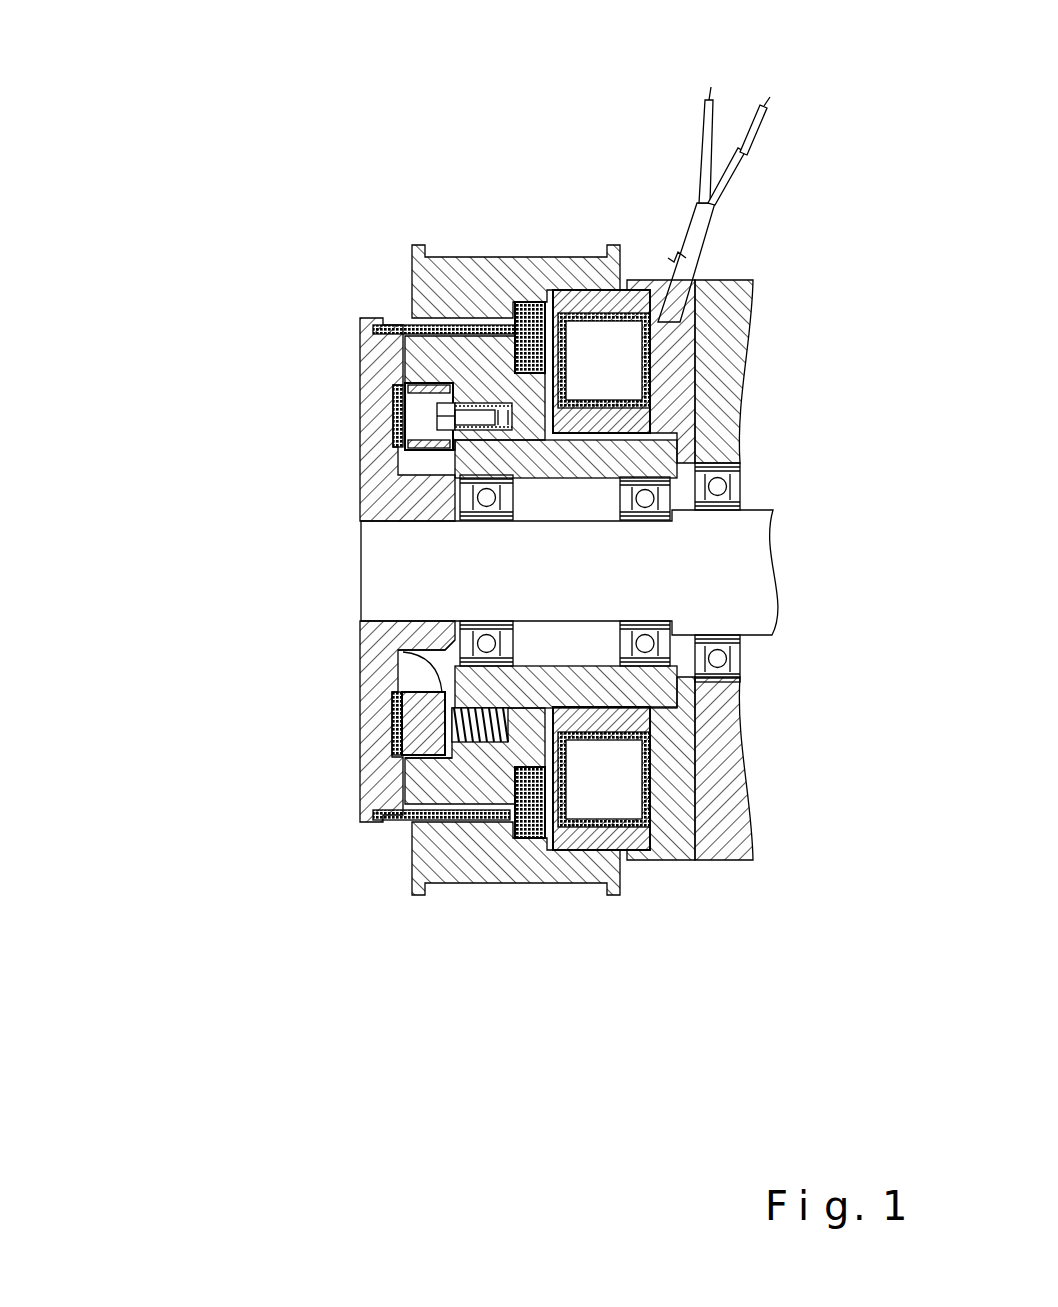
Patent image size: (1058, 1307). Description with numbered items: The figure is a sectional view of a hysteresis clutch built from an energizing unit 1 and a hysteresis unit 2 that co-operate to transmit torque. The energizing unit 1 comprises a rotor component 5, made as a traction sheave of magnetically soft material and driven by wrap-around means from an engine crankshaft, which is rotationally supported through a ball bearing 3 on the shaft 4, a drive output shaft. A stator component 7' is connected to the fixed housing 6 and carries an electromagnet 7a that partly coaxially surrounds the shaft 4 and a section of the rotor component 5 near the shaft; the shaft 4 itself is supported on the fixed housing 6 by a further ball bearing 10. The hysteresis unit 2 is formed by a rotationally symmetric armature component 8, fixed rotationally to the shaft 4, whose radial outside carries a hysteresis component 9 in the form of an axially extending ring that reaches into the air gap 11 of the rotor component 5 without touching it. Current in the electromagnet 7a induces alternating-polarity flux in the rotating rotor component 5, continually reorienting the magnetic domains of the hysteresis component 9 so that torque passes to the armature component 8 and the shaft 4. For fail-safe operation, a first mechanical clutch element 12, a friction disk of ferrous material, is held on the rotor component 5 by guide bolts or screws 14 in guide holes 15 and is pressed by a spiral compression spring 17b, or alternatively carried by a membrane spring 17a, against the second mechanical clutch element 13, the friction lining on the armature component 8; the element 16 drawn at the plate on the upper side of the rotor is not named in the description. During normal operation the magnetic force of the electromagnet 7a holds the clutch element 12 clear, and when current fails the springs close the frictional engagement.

The energizing unit 1 is at (574, 205).
The hysteresis unit 2 is at (343, 324).
The ball bearing 3 is at (650, 640).
The shaft 4 is at (630, 550).
The rotor component 5 is at (482, 285).
The fixed housing 6 is at (712, 355).
The stator component 7' is at (739, 570).
The electromagnet 7a is at (600, 355).
The armature component 8 is at (395, 462).
The hysteresis component 9 is at (408, 330).
The ball bearing 10 is at (722, 657).
The air gap 11 is at (466, 834).
The first mechanical clutch element 12 is at (393, 730).
The second mechanical clutch element 13 is at (403, 395).
The guide bolts or screws 14 is at (398, 410).
The guide holes 15 is at (455, 453).
The armature plate 16 is at (407, 318).
The membrane spring 17a is at (420, 672).
The spiral compression spring 17b is at (420, 723).